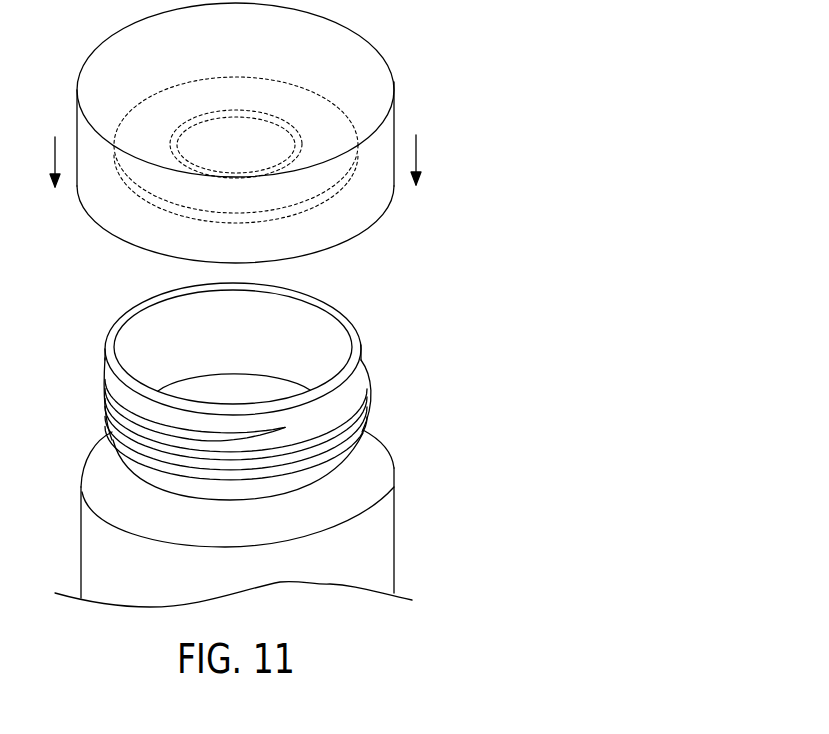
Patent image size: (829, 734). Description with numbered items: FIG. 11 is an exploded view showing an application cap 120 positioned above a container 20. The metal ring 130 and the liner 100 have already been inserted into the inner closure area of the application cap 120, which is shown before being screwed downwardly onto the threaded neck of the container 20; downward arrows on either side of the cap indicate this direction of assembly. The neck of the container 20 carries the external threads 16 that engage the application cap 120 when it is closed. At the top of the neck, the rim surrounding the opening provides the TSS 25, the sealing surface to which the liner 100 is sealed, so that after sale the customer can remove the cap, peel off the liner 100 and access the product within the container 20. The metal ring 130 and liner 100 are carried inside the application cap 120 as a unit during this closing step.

The liner 100 is at (353, 180).
The application cap 120 is at (394, 128).
The metal ring 130 is at (335, 53).
The container 20 is at (394, 468).
The threads 16 is at (372, 400).
The TSS 25 is at (357, 343).